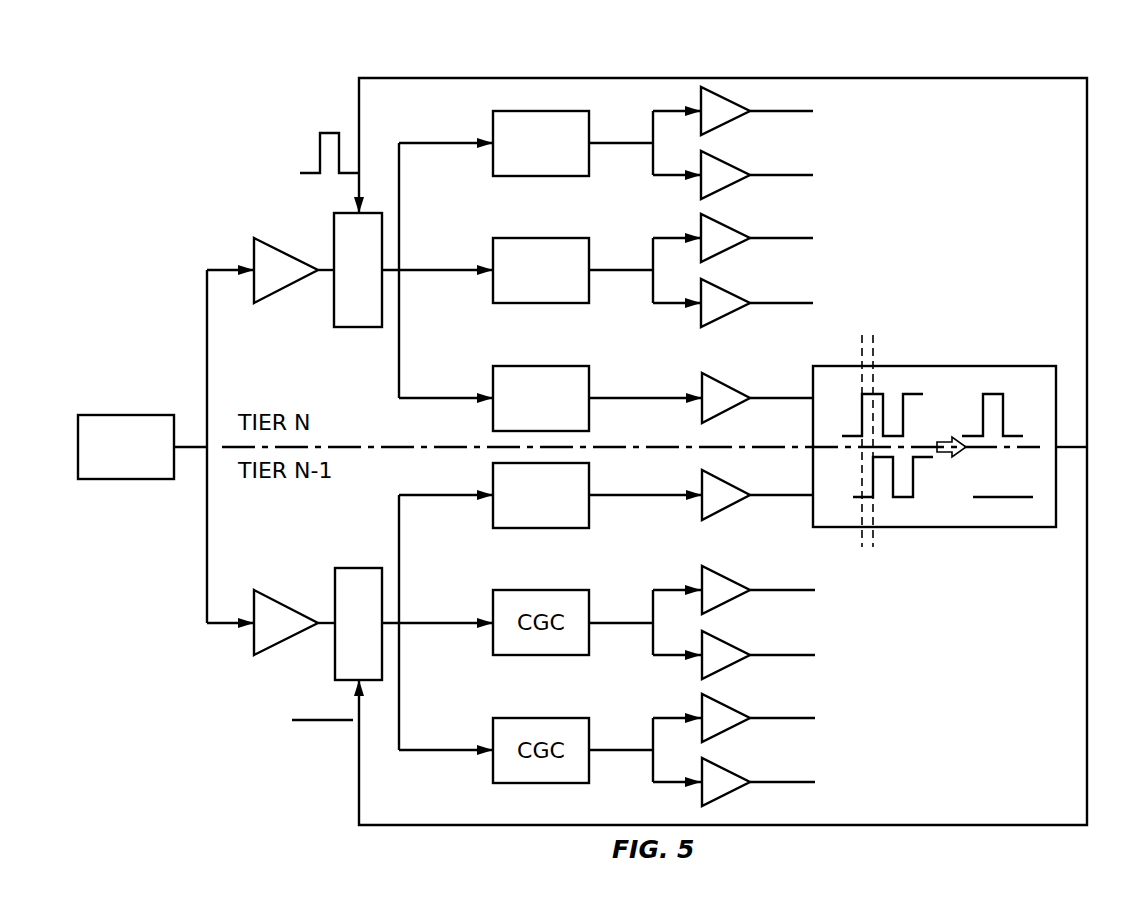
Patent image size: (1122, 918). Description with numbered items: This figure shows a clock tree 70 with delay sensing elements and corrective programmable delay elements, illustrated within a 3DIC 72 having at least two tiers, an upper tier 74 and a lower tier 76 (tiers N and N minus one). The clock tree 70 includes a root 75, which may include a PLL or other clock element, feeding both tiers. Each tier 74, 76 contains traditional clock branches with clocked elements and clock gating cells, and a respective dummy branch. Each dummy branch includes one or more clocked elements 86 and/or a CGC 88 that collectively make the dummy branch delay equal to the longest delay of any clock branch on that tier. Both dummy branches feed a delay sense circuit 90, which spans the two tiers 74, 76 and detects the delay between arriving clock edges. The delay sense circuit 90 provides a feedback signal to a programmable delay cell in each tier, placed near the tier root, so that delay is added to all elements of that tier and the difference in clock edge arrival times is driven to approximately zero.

The clock tree 70 is at (578, 92).
The 3DIC 72 is at (370, 66).
The tier N 74 is at (246, 187).
The root 75 is at (110, 415).
The tier N-1 76 is at (212, 666).
The clocked element 86 is at (722, 385).
The CGC 88 is at (592, 380).
The delay sense circuit 90 is at (977, 366).